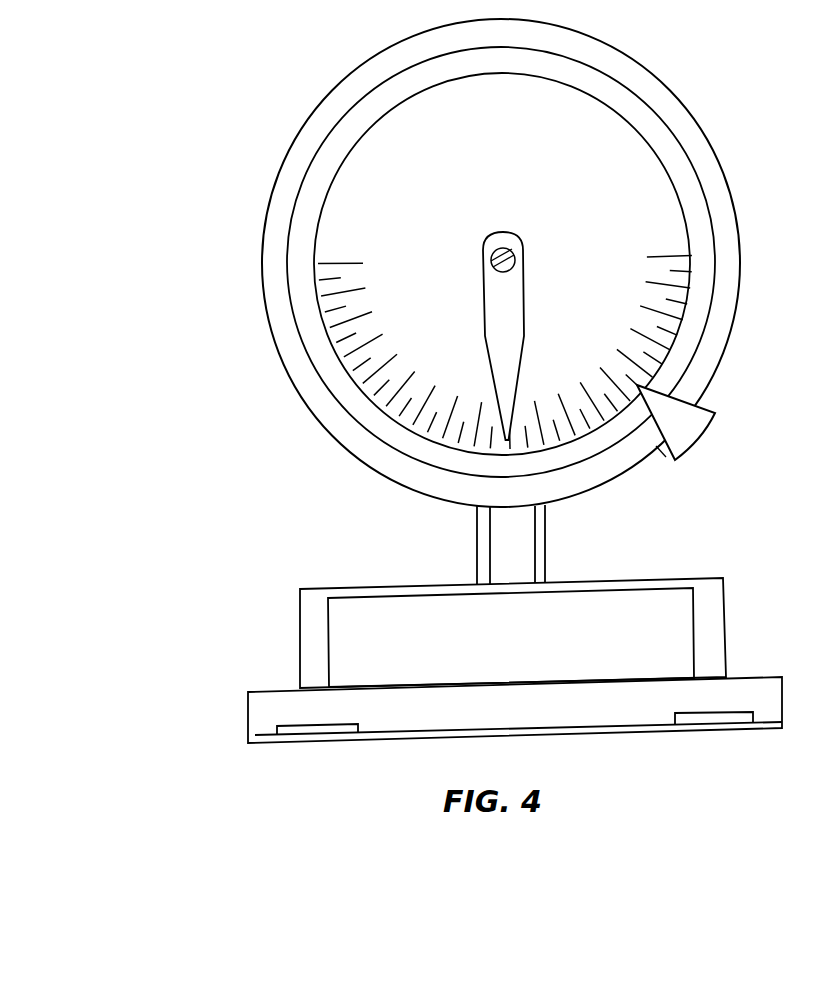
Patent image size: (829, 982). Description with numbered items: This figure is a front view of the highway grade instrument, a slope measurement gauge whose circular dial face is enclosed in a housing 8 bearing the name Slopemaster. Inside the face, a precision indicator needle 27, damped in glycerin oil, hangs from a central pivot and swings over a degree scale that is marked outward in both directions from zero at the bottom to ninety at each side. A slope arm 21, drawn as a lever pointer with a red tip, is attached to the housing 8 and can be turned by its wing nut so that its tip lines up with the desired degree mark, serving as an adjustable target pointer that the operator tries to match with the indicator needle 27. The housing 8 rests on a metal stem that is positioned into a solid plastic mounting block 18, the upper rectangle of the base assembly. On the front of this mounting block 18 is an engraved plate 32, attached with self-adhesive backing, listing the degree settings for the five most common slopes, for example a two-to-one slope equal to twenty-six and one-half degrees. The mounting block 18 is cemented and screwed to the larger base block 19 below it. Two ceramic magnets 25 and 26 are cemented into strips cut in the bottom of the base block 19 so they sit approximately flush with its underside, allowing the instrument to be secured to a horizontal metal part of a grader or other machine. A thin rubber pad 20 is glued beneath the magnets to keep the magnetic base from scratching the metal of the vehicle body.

The housing 8 is at (731, 188).
The indicator needle 27 is at (513, 298).
The slope arm 21 is at (700, 438).
The mounting block 18 is at (709, 588).
The engraved plate 32 is at (357, 667).
The base block 19 is at (767, 697).
The rubber pad 20 is at (397, 735).
The magnet 25 is at (313, 732).
The magnet 26 is at (712, 722).